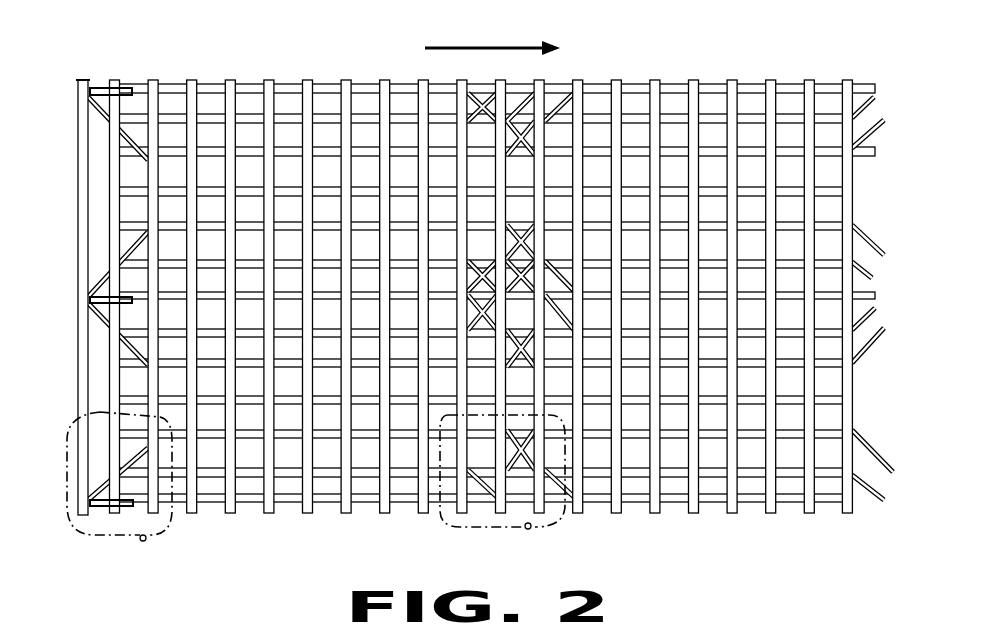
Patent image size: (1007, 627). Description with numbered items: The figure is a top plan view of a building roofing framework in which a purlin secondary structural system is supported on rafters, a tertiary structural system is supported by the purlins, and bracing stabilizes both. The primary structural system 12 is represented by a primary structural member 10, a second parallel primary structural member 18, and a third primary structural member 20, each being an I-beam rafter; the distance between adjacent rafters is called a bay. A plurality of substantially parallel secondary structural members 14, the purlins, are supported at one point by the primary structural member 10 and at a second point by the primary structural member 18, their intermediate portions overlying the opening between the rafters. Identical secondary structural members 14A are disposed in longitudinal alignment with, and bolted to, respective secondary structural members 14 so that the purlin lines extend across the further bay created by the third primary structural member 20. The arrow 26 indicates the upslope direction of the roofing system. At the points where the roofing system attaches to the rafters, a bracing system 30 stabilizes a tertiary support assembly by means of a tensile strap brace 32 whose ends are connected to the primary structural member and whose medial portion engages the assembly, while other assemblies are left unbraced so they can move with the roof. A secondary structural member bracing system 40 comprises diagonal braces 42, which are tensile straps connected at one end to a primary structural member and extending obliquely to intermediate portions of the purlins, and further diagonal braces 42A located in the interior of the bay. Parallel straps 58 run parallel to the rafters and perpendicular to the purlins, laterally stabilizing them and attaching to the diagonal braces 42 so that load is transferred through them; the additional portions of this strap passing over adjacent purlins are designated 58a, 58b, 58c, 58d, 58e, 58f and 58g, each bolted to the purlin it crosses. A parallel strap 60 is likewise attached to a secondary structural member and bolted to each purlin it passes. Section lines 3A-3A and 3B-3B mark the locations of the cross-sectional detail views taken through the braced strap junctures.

The primary structural member 10 is at (110, 538).
The primary structural system 12 is at (100, 74).
The secondary structural members 14 is at (110, 410).
The secondary structural members 14A is at (113, 187).
The primary structural member 18 is at (138, 303).
The third primary structural member 20 is at (827, 80).
The arrow 26 is at (485, 46).
The bracing system 30 is at (134, 82).
The tensile strap brace 32 is at (510, 467).
The secondary structural member bracing system 40 is at (83, 127).
The diagonal braces 42 is at (125, 253).
The diagonal braces 42A is at (528, 468).
The parallel straps 58 is at (165, 448).
The parallel strap portion 58a is at (206, 446).
The parallel strap portion 58b is at (246, 446).
The parallel strap portion 58c is at (284, 446).
The parallel strap portion 58d is at (323, 446).
The parallel strap portion 58e is at (361, 446).
The parallel strap portion 58f is at (399, 446).
The parallel strap portion 58g is at (446, 436).
The parallel strap 60 is at (172, 480).
The section line 3A-3A is at (531, 529).
The section line 3B-3B is at (145, 541).